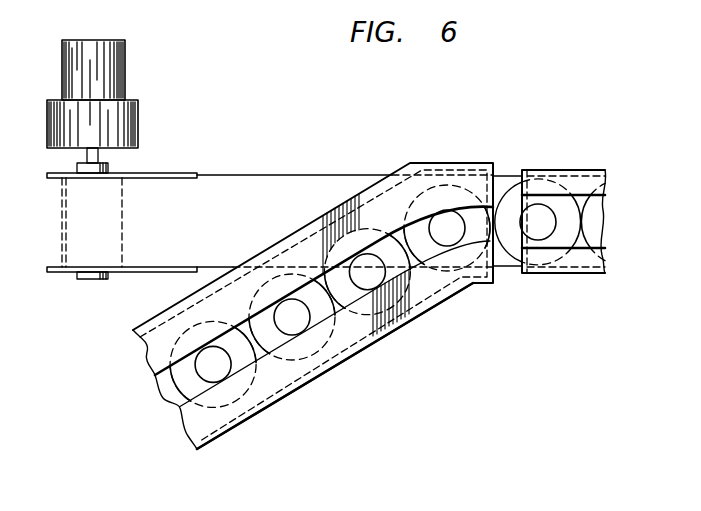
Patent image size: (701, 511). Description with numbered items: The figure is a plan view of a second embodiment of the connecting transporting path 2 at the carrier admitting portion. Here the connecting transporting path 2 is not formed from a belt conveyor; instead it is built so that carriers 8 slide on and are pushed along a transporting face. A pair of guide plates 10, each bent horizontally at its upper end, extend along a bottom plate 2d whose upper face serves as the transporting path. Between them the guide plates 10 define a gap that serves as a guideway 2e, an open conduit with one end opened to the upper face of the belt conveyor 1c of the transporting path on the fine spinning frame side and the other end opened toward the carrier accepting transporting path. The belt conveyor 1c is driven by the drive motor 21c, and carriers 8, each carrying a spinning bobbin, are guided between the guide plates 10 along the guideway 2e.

The drive motor 21c is at (102, 67).
The belt conveyor 1c is at (247, 197).
The connecting transporting path 2 is at (350, 380).
The bottom plate 2d is at (258, 347).
The guideway 2e is at (243, 357).
The carrier 8 is at (500, 200).
The guide plates 10 is at (375, 200).